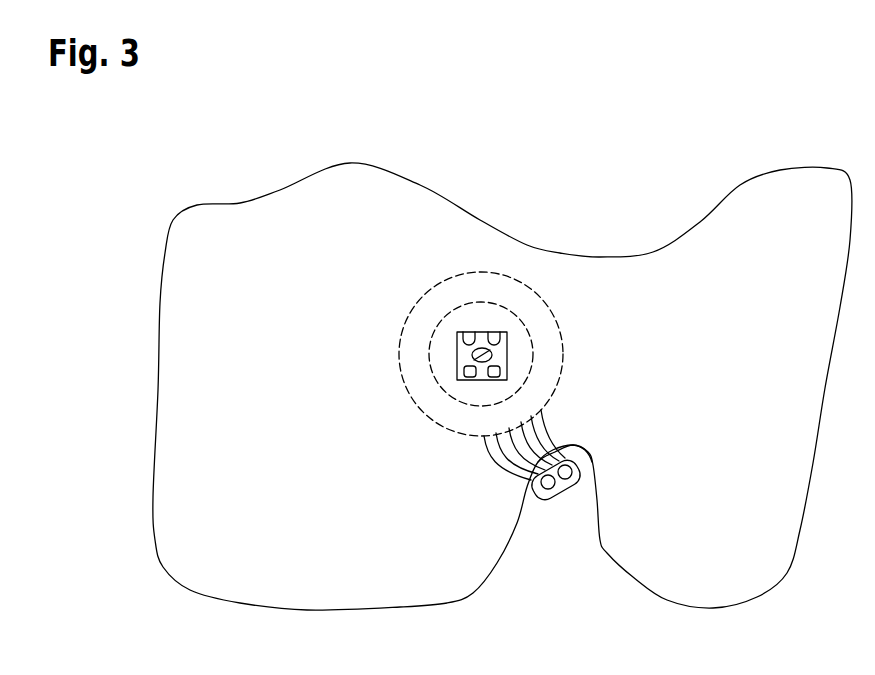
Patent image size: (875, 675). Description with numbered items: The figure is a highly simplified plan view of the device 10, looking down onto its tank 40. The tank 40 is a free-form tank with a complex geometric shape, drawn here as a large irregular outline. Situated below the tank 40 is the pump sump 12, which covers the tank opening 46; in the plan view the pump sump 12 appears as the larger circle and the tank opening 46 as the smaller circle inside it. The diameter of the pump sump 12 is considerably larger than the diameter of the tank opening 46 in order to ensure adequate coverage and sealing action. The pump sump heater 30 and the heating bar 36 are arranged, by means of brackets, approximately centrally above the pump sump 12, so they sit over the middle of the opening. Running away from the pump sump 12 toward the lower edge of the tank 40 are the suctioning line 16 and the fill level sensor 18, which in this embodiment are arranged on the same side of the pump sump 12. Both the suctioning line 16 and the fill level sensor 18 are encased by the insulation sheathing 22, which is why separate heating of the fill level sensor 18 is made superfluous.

The device 10 is at (385, 114).
The tank 40 is at (240, 203).
The pump sump 12 is at (548, 309).
The tank opening 46 is at (498, 306).
The pump sump heater 30 is at (478, 331).
The heating bar 36 is at (508, 354).
The fill level sensor 18 is at (543, 496).
The suctioning line 16 is at (571, 491).
The insulation sheathing 22 is at (590, 456).